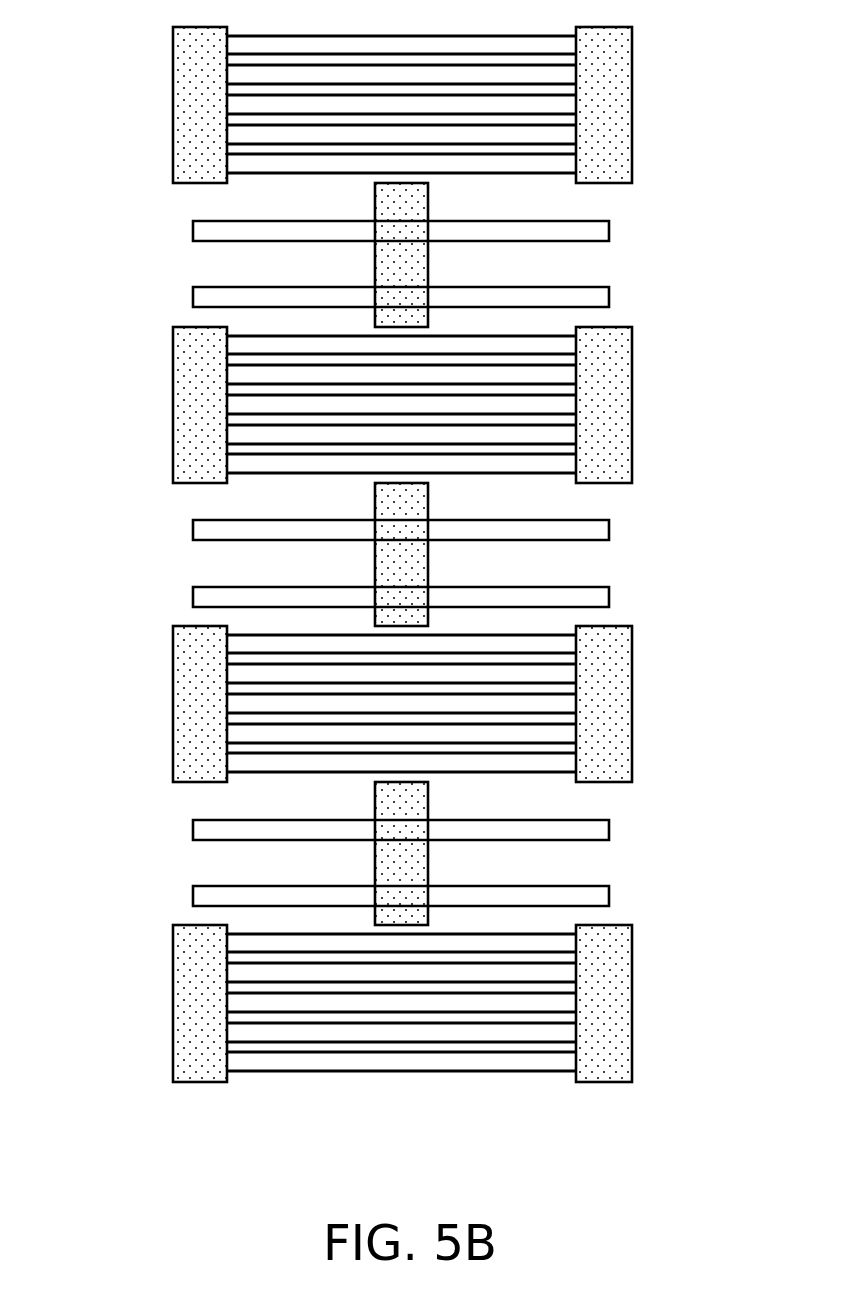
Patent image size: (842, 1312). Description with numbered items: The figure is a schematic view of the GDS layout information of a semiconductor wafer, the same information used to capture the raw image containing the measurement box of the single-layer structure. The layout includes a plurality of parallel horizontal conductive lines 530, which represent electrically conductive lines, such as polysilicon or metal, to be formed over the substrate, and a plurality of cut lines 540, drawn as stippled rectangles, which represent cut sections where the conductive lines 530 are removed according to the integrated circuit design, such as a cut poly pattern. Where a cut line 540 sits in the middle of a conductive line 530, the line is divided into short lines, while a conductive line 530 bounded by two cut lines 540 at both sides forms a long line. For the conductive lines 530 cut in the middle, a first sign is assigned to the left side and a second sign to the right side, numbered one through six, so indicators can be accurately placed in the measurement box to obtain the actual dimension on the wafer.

The conductive line 530 is at (400, 1073).
The cut line 540 is at (200, 1083).